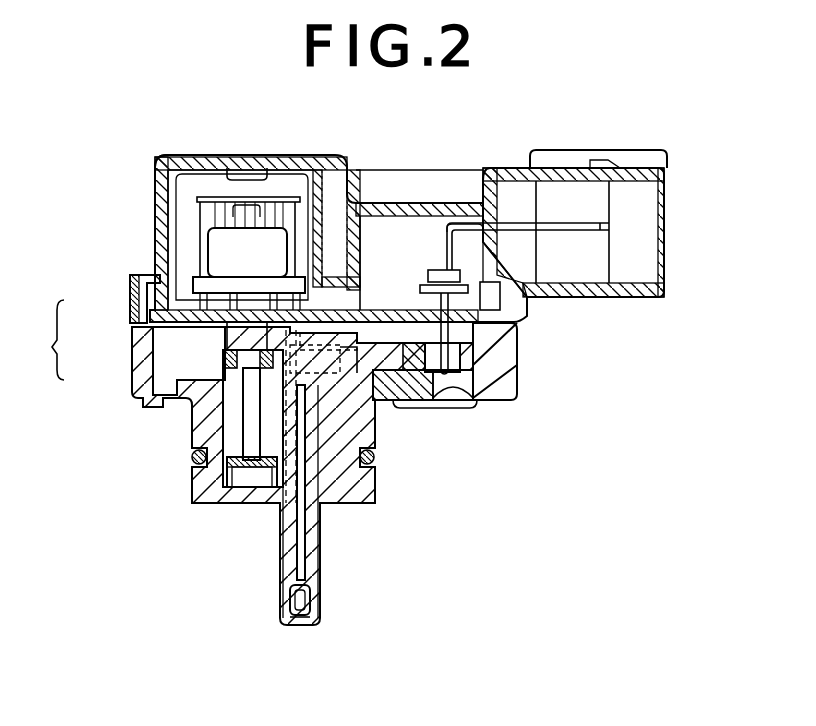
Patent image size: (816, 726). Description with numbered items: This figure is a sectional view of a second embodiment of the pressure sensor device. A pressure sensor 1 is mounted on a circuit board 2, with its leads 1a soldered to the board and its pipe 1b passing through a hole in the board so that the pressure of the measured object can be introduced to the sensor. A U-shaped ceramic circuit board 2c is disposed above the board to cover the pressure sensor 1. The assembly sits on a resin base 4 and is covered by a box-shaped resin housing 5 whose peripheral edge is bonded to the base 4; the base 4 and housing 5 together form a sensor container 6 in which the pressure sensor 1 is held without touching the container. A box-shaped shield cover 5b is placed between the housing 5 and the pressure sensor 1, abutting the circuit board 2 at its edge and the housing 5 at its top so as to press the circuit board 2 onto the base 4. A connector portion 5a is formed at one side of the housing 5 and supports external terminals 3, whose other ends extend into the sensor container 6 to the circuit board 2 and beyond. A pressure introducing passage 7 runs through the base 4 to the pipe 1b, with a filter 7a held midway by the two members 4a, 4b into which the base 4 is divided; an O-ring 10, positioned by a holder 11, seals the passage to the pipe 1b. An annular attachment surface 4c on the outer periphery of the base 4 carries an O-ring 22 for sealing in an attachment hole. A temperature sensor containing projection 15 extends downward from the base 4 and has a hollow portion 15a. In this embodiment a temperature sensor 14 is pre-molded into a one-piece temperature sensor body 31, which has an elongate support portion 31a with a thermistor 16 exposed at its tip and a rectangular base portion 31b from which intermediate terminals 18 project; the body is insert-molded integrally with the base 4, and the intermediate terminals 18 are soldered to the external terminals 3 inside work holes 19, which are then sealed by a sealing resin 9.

The pressure sensor 1 is at (205, 245).
The leads 1a is at (205, 278).
The pipe 1b is at (222, 383).
The circuit board 2 is at (133, 283).
The ceramic circuit board 2c is at (168, 152).
The external terminals 3 is at (595, 232).
The base 4 is at (128, 350).
The member 4a is at (232, 430).
The member 4b is at (200, 492).
The annular attachment surface 4c is at (373, 425).
The housing 5 is at (128, 303).
The connector portion 5a is at (585, 150).
The shield cover 5b is at (200, 193).
The sensor container 6 is at (44, 340).
The pressure introducing passage 7 is at (243, 440).
The filter 7a is at (252, 480).
The sealing resin 9 is at (466, 392).
The O-ring 10 is at (148, 403).
The holder 11 is at (315, 330).
The temperature sensor 14 is at (305, 600).
The temperature sensor containing projection 15 is at (322, 565).
The hollow portion 15a is at (319, 530).
The thermistor 16 is at (300, 620).
The intermediate terminals 18 is at (437, 382).
The work holes 19 is at (498, 370).
The O-ring 22 is at (369, 460).
The temperature sensor body 31 is at (283, 540).
The support portion 31a is at (283, 590).
The base portion 31b is at (350, 335).